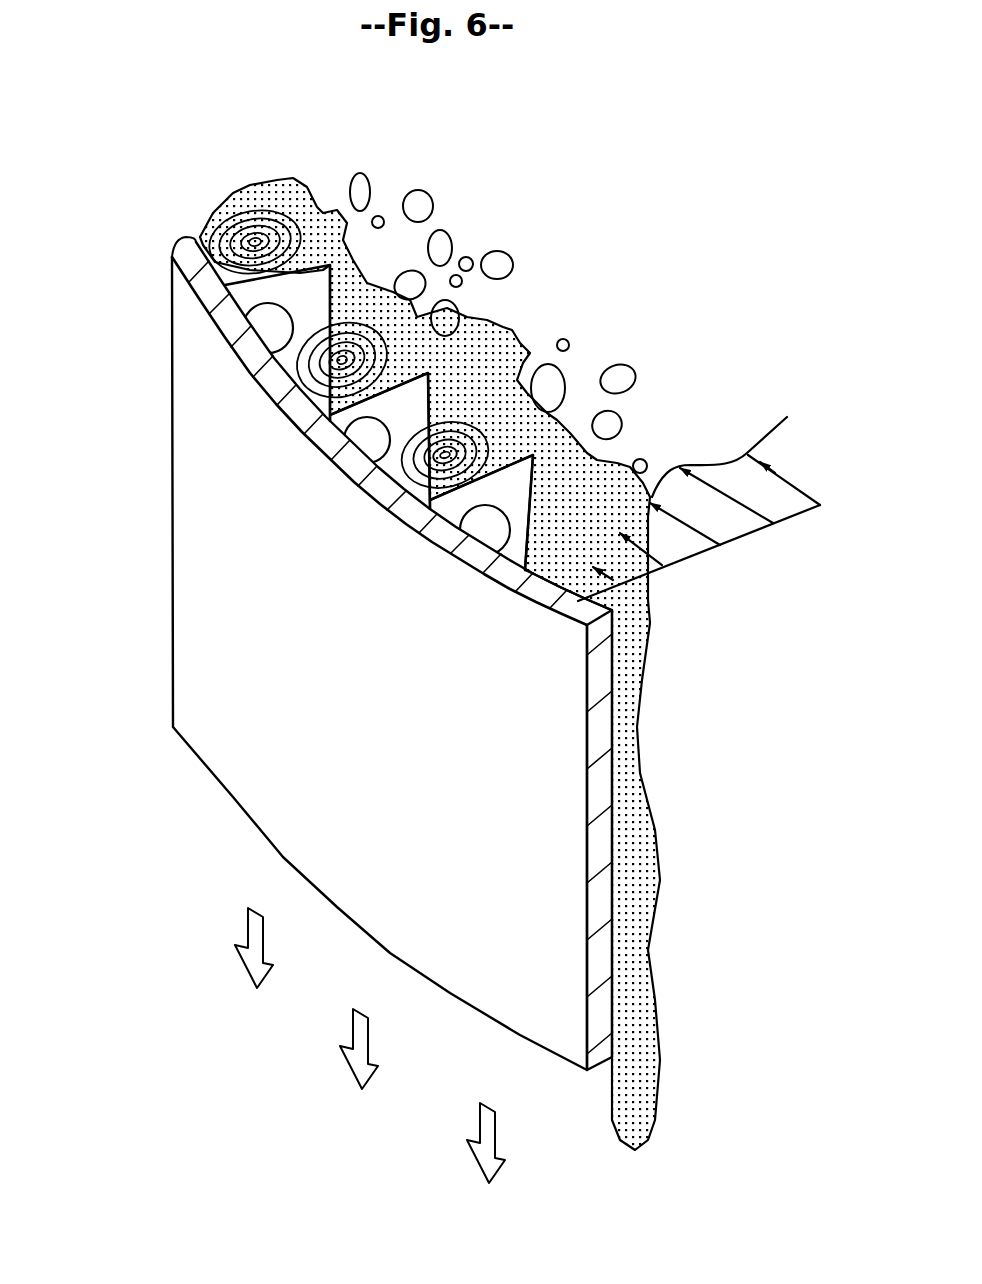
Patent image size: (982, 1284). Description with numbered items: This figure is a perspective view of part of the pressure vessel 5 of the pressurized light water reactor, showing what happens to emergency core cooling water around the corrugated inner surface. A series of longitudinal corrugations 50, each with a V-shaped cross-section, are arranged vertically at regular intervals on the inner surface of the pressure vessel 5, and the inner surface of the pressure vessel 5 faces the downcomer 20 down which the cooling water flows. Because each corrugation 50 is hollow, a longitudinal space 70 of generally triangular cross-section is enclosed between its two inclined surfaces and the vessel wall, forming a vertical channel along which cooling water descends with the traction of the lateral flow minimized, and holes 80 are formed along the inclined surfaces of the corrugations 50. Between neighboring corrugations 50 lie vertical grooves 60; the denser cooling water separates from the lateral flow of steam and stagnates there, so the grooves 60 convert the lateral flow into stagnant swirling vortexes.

The pressure vessel 5 is at (212, 605).
The downcomer 20 is at (323, 213).
The longitudinal corrugations 50 is at (253, 295).
The vertical grooves 60 is at (367, 330).
The longitudinal space 70 is at (497, 553).
The holes 80 is at (323, 447).